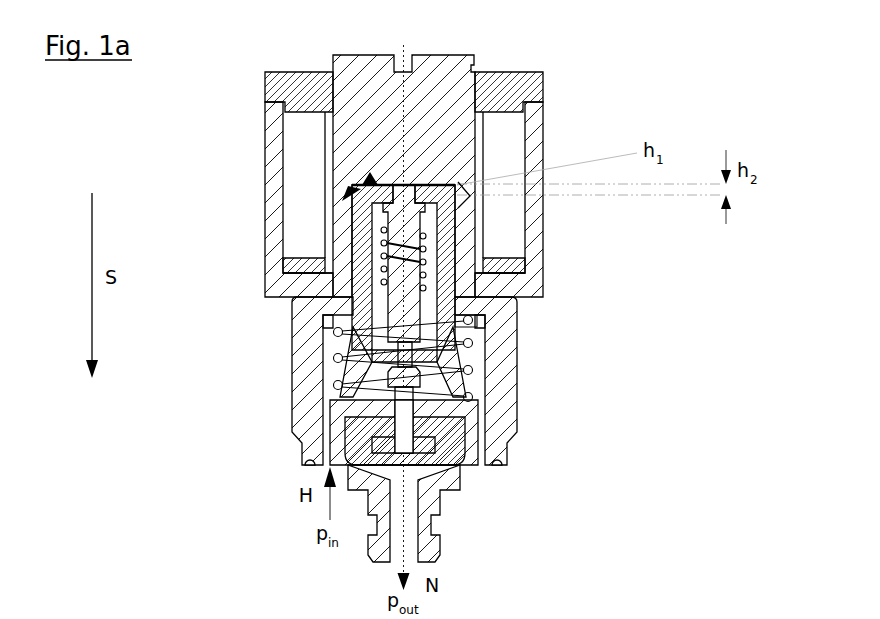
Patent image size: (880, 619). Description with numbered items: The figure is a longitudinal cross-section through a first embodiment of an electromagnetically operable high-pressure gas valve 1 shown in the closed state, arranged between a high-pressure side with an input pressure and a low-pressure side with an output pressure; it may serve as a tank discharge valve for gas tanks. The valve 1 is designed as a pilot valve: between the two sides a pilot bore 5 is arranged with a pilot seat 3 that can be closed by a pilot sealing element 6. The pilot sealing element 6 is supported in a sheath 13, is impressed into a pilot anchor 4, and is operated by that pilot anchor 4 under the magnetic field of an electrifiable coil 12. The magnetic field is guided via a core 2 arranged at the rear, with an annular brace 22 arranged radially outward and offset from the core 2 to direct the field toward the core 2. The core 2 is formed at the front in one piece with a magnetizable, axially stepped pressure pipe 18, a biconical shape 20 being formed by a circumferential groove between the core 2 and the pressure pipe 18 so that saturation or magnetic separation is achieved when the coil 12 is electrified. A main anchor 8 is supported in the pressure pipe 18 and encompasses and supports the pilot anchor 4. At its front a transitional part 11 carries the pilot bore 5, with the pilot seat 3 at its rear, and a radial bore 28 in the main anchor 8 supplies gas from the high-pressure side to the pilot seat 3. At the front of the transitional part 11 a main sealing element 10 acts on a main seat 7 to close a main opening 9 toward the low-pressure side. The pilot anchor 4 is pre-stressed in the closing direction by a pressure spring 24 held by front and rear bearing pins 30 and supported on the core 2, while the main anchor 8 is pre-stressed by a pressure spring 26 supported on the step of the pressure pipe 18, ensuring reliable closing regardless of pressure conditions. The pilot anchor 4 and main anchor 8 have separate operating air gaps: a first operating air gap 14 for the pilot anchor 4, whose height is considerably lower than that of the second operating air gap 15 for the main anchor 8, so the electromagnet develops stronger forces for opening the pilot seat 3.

The high-pressure gas valve 1 is at (140, 141).
The core 2 is at (433, 83).
The pilot seat 3 is at (320, 392).
The pilot anchor 4 is at (465, 257).
The pilot bore 5 is at (513, 430).
The pilot sealing element 6 is at (430, 350).
The main seat 7 is at (434, 455).
The main anchor 8 is at (425, 282).
The main opening 9 is at (400, 533).
The main sealing element 10 is at (418, 418).
The transitional part 11 is at (497, 465).
The coil 12 is at (507, 130).
The sheath 13 is at (450, 326).
The first operating air gap 14 is at (367, 178).
The second operating air gap 15 is at (290, 237).
The pressure pipe 18 is at (500, 277).
The biconical shape 20 is at (315, 193).
The brace 22 is at (502, 89).
The pressure spring 24 is at (422, 262).
The pressure spring 26 is at (475, 377).
The radial bore 28 is at (345, 362).
The bearing pins 30 is at (345, 272).